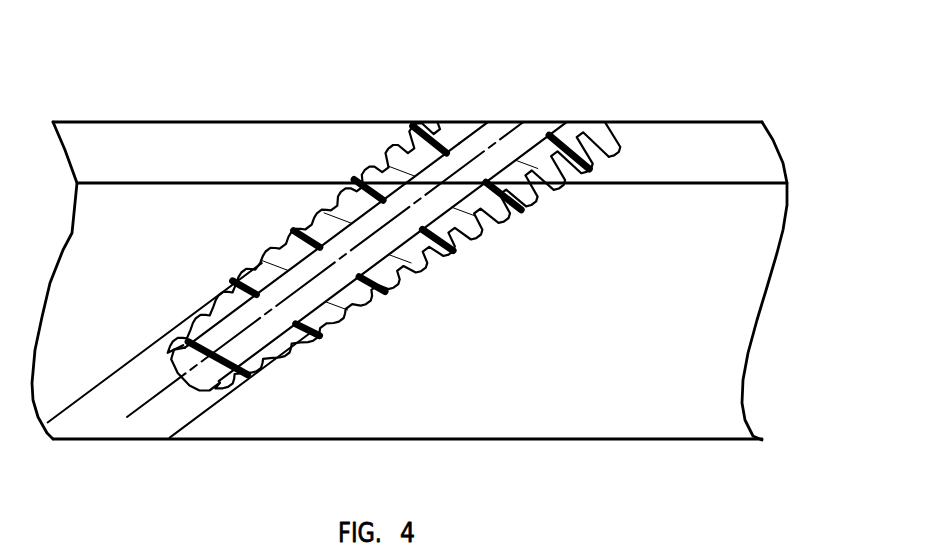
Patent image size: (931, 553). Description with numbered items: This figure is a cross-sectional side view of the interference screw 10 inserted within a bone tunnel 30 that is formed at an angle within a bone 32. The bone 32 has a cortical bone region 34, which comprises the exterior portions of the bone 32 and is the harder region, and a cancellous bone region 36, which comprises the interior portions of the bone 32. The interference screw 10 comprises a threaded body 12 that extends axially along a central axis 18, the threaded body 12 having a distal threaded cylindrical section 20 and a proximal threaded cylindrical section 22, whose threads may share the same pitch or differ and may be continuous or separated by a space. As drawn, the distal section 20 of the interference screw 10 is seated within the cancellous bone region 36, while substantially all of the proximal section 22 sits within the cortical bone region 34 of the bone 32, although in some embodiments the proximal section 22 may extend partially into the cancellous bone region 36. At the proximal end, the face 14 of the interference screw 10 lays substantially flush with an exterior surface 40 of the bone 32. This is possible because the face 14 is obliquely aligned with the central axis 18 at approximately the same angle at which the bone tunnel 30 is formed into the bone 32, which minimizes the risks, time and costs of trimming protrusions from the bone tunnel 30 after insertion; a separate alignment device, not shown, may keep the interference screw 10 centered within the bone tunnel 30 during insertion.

The interference screw 10 is at (406, 227).
The threaded body 12 is at (453, 132).
The face 14 is at (580, 113).
The central axis 18 is at (590, 74).
The distal threaded cylindrical section 20 is at (177, 308).
The proximal threaded cylindrical section 22 is at (437, 125).
The bone tunnel 30 is at (103, 412).
The bone 32 is at (736, 121).
The cortical bone region 34 is at (767, 158).
The cancellous bone region 36 is at (763, 233).
The exterior surface 40 is at (611, 118).